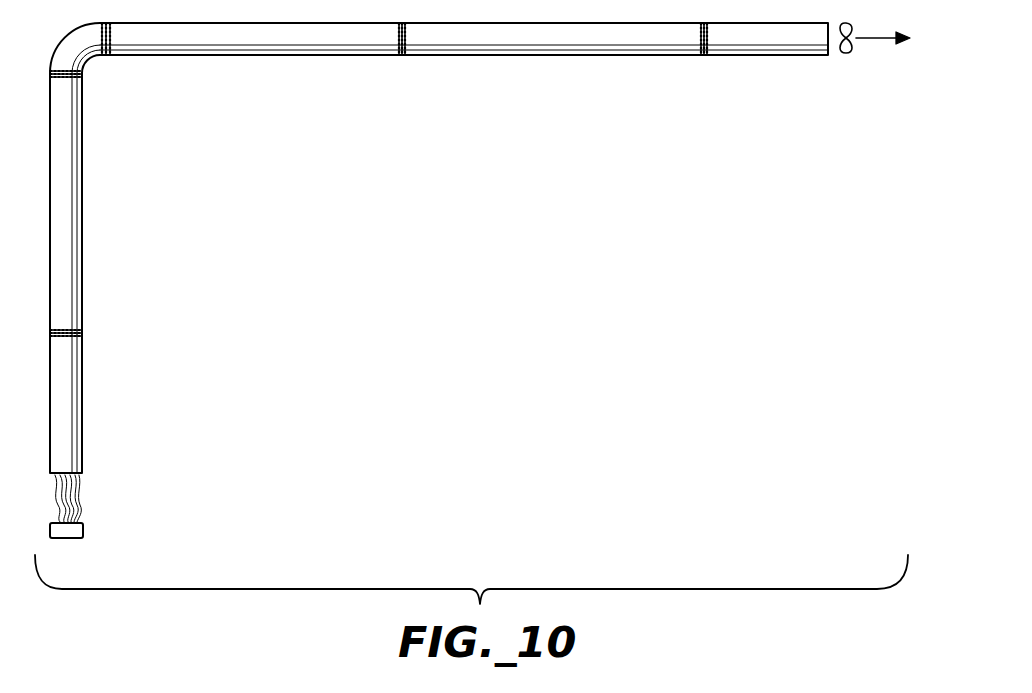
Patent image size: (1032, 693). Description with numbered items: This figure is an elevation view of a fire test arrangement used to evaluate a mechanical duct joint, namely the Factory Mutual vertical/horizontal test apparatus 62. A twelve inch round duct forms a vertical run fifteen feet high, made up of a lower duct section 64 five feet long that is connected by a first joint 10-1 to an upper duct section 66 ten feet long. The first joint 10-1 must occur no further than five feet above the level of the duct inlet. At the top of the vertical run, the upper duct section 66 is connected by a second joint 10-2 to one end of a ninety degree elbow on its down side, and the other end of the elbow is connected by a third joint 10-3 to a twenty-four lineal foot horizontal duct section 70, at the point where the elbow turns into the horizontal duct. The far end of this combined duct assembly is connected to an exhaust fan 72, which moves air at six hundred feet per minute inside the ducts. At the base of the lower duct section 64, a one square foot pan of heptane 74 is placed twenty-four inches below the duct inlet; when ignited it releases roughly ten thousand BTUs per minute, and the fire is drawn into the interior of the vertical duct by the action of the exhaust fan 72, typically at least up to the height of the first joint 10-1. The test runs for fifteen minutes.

The first joint 10-1 is at (68, 330).
The second joint 10-2 is at (62, 76).
The third joint 10-3 is at (108, 32).
The vertical/horizontal test apparatus 62 is at (140, 273).
The lower duct section 64 is at (68, 395).
The upper duct section 66 is at (68, 210).
The horizontal duct section 70 is at (528, 40).
The exhaust fan 72 is at (849, 48).
The pan of heptane 74 is at (85, 527).